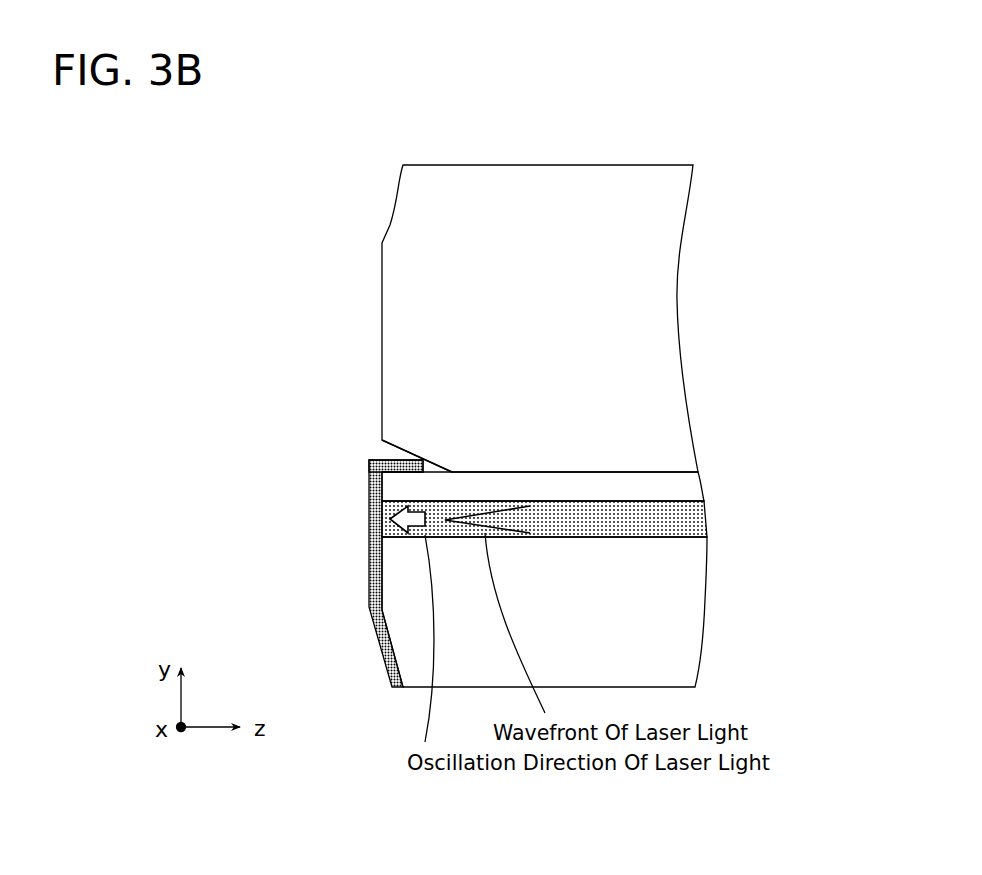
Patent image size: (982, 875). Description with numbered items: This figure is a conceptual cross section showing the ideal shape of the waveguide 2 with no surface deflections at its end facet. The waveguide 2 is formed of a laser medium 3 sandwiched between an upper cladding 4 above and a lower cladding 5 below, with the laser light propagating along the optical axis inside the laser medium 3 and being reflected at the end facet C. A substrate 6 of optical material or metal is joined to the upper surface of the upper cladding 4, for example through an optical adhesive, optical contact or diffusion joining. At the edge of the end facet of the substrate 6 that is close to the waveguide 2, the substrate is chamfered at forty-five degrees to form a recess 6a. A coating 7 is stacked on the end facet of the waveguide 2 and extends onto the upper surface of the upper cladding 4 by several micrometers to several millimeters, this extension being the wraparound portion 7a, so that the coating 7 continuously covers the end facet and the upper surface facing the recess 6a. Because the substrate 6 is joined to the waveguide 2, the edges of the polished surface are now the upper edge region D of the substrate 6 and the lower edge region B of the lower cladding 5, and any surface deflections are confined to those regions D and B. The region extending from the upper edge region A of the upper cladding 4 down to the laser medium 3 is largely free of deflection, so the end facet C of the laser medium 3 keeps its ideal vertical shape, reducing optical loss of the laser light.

The waveguide 2 is at (626, 580).
The laser medium 3 is at (688, 522).
The upper cladding 4 is at (687, 490).
The lower cladding 5 is at (599, 612).
The substrate 6 is at (680, 396).
The recess 6a is at (400, 448).
The coating 7 is at (368, 587).
The wraparound portion 7a is at (393, 460).
The upper edge region A is at (360, 475).
The lower edge region B is at (383, 683).
The end facet C is at (360, 520).
The upper edge region D is at (392, 170).